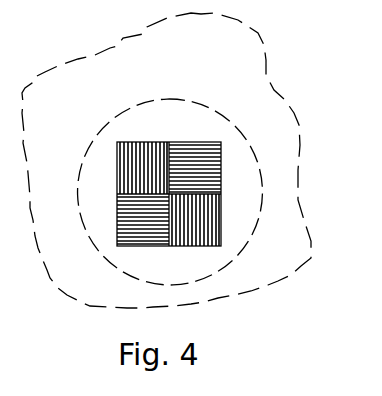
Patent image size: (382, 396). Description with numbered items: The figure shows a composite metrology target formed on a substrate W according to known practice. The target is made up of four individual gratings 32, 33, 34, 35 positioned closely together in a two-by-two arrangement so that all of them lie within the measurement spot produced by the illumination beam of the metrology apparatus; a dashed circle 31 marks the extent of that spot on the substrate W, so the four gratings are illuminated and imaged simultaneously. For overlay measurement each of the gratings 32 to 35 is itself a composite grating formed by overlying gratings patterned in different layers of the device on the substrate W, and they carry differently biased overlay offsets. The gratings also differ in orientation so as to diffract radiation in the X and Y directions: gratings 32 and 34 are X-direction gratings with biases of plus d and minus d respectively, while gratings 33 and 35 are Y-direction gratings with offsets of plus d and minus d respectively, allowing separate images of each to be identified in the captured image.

The substrate W is at (97, 48).
The circle 31 is at (118, 118).
The grating 32 is at (117, 176).
The grating 33 is at (117, 229).
The grating 34 is at (222, 223).
The grating 35 is at (222, 168).